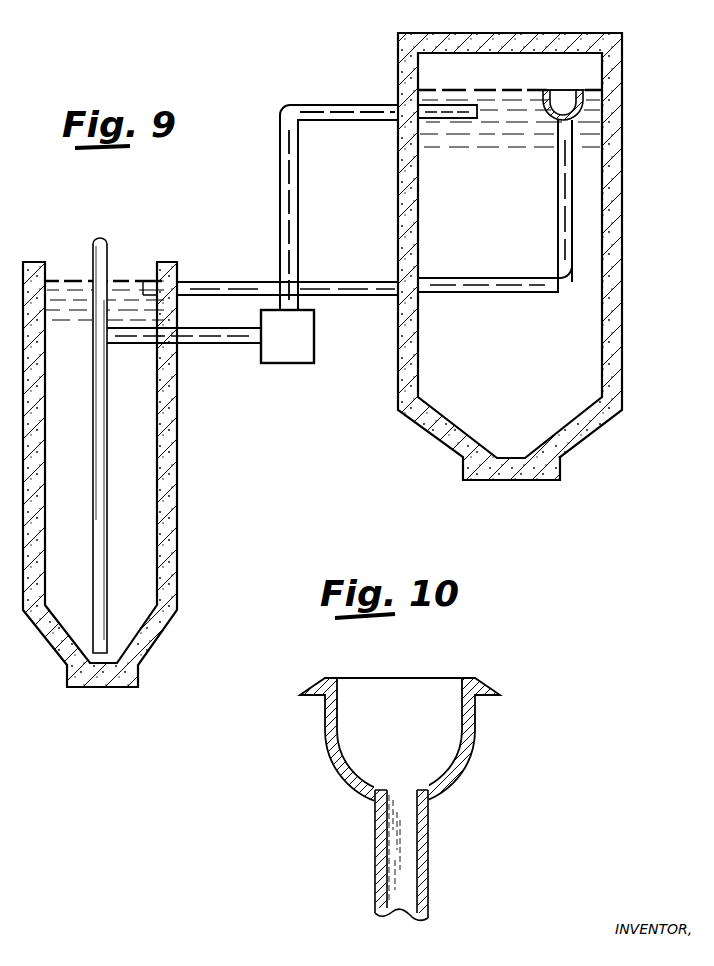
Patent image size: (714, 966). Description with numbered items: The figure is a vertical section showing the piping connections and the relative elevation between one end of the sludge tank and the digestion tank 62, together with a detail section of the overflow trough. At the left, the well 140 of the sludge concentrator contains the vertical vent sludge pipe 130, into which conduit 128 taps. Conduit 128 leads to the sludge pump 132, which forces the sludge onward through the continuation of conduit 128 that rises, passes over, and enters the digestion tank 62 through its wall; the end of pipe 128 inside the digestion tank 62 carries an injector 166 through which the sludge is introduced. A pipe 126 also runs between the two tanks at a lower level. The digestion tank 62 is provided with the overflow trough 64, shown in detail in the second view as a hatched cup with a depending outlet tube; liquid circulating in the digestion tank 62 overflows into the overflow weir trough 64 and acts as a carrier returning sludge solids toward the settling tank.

In FIG. 9, the digestion tank 62 is at (622, 285).
In FIG. 9, the overflow trough 64 is at (563, 90).
In FIG. 10, the overflow trough 64 is at (330, 740).
In FIG. 9, the pipe 126 is at (233, 241).
In FIG. 9, the conduit 128 is at (364, 71).
In FIG. 9, the vent sludge pipe 130 is at (94, 498).
In FIG. 9, the sludge pump 132 is at (303, 335).
In FIG. 9, the well 140 is at (177, 518).
In FIG. 9, the injector 166 is at (458, 116).